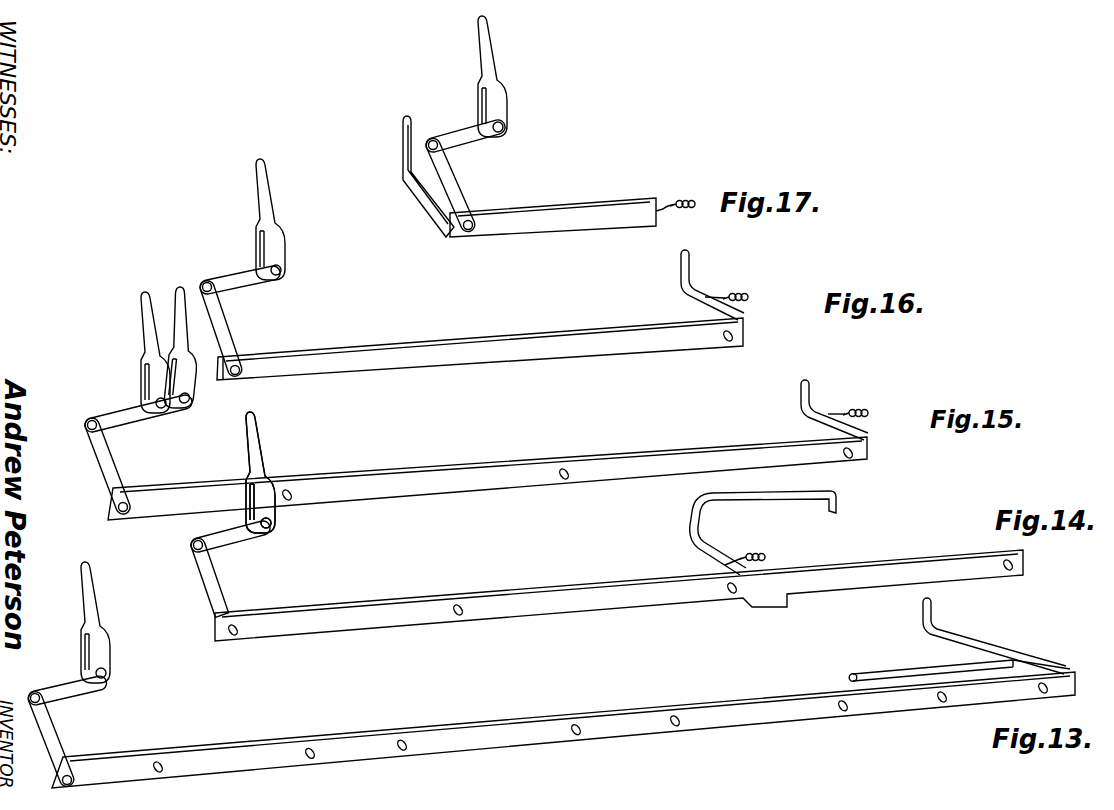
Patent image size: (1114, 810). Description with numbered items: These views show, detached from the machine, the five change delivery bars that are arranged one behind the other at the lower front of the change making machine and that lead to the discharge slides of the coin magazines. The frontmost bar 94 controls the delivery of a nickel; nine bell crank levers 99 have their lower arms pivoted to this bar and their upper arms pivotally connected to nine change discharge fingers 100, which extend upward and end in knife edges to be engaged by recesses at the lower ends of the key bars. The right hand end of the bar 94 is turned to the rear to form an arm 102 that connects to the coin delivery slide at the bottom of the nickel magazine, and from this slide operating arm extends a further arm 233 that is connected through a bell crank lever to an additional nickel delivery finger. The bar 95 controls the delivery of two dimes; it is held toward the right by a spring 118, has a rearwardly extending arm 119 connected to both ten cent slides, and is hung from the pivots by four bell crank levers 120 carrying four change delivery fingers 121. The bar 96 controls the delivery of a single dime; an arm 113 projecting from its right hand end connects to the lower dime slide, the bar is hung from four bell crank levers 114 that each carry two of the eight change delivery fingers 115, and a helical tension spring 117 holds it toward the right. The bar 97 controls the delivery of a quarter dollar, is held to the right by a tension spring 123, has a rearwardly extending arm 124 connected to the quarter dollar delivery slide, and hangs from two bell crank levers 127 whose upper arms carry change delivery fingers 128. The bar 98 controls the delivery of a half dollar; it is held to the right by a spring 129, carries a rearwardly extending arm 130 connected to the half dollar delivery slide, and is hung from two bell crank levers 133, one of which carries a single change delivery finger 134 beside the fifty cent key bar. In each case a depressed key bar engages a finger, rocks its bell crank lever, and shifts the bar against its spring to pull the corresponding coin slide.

In FIG. 13, the five cent delivery bar 94 is at (538, 720).
In FIG. 14, the twenty cent delivery bar 95 is at (525, 600).
In FIG. 15, the ten cent delivery bar 96 is at (526, 472).
In FIG. 16, the twenty-five cent delivery bar 97 is at (528, 334).
In FIG. 17, the fifty cent delivery bar 98 is at (571, 210).
In FIG. 13, the bell crank levers 99 is at (50, 734).
In FIG. 13, the change discharge fingers 100 is at (92, 604).
In FIG. 13, the arm 102 is at (958, 641).
In FIG. 15, the arm 113 is at (800, 392).
In FIG. 15, the bell crank levers 114 is at (110, 460).
In FIG. 15, the change delivery fingers 115 is at (180, 334).
In FIG. 15, the helical tension spring 117 is at (857, 410).
In FIG. 14, the spring 118 is at (738, 545).
In FIG. 14, the rearwardly extending arm 119 is at (806, 498).
In FIG. 14, the bell crank levers 120 is at (214, 583).
In FIG. 15, the change delivery fingers 121 is at (254, 452).
In FIG. 14, the change delivery fingers 121 is at (260, 472).
In FIG. 16, the tension spring 123 is at (747, 298).
In FIG. 16, the rearwardly extending arm 124 is at (690, 270).
In FIG. 16, the bell crank levers 127 is at (222, 324).
In FIG. 16, the change delivery fingers 128 is at (276, 250).
In FIG. 17, the spring 129 is at (684, 203).
In FIG. 17, the rearwardly extending arm 130 is at (406, 148).
In FIG. 17, the bell crank levers 133 is at (450, 181).
In FIG. 17, the change delivery finger 134 is at (496, 90).
In FIG. 13, the arm 233 is at (895, 672).